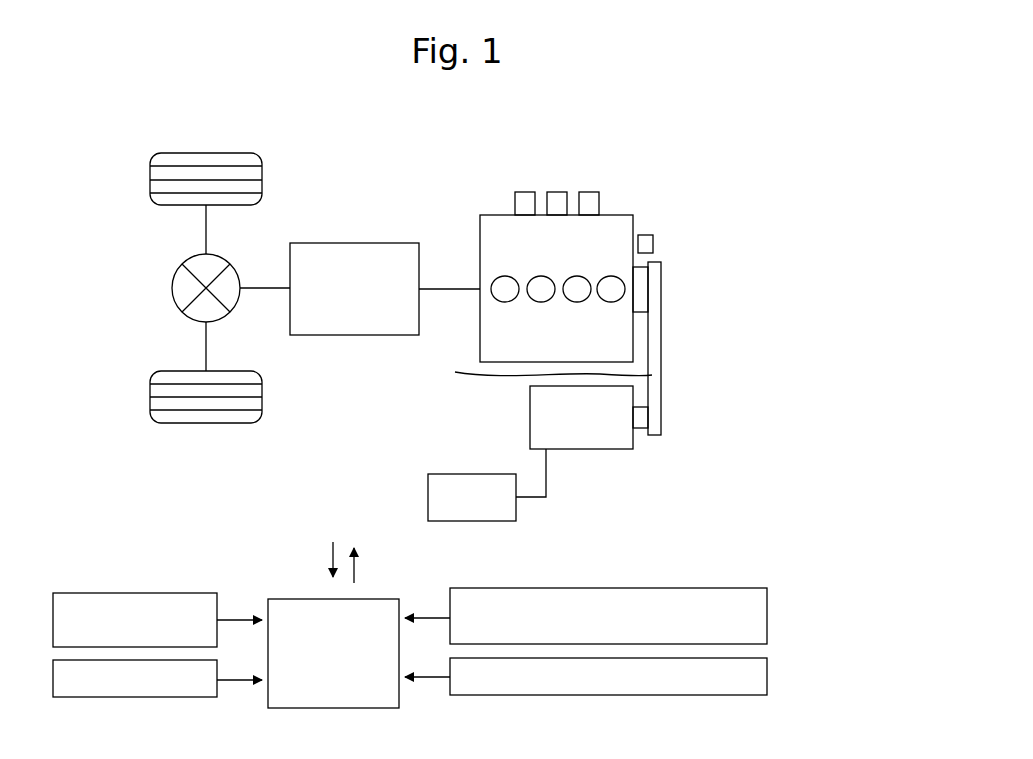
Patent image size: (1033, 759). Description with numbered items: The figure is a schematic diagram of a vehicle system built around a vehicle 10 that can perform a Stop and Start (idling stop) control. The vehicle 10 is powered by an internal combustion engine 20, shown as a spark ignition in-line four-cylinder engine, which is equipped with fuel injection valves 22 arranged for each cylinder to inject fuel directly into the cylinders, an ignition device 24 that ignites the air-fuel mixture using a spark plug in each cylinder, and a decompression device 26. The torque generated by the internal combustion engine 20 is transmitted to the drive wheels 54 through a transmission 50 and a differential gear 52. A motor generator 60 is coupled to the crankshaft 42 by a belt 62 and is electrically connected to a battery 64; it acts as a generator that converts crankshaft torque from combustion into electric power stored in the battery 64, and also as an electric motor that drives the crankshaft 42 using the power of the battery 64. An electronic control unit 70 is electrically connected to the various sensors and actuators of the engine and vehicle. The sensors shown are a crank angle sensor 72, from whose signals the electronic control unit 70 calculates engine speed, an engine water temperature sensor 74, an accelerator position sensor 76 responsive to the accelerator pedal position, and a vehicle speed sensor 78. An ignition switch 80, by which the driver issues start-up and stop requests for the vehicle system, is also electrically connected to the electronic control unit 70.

The vehicle 10 is at (702, 146).
The internal combustion engine 20 is at (476, 211).
The fuel injection valves 22 is at (525, 192).
The ignition device 24 is at (557, 192).
The decompression device 26 is at (586, 192).
The crankshaft 42 is at (638, 290).
The transmission 50 is at (360, 243).
The differential gear 52 is at (172, 288).
The drive wheels 54 is at (150, 180).
The motor generator 60 is at (530, 412).
The belt 62 is at (534, 372).
The battery 64 is at (428, 497).
The electronic control unit 70 is at (301, 599).
The crank angle sensor 72 is at (653, 243).
The engine water temperature sensor 74 is at (767, 606).
The accelerator position sensor 76 is at (767, 676).
The vehicle speed sensor 78 is at (105, 593).
The ignition switch 80 is at (105, 697).